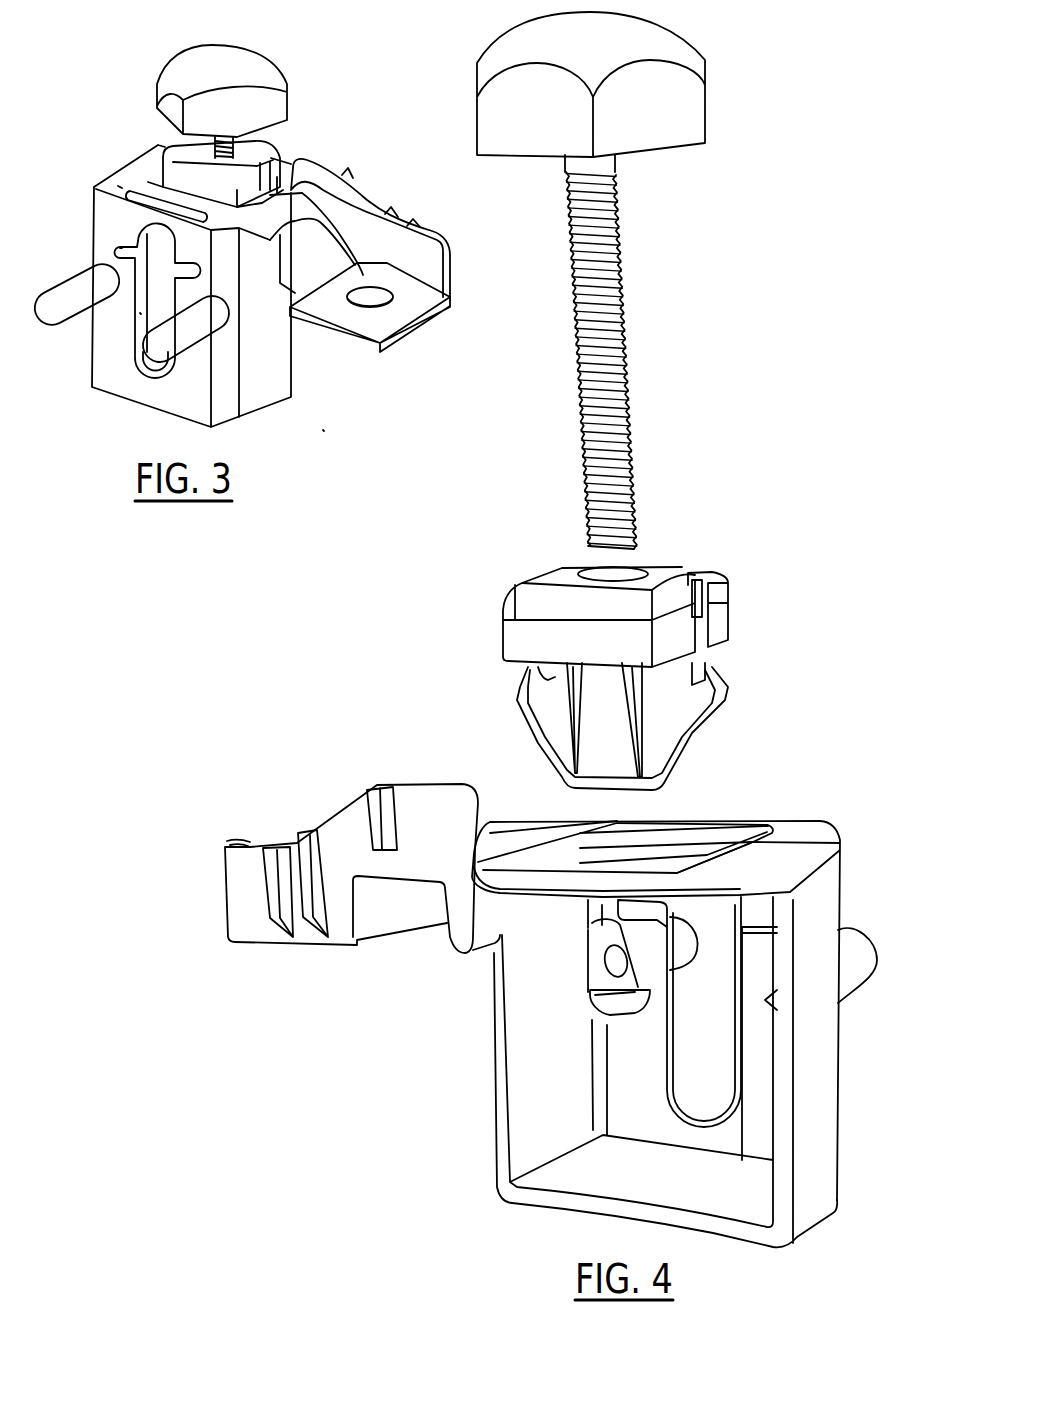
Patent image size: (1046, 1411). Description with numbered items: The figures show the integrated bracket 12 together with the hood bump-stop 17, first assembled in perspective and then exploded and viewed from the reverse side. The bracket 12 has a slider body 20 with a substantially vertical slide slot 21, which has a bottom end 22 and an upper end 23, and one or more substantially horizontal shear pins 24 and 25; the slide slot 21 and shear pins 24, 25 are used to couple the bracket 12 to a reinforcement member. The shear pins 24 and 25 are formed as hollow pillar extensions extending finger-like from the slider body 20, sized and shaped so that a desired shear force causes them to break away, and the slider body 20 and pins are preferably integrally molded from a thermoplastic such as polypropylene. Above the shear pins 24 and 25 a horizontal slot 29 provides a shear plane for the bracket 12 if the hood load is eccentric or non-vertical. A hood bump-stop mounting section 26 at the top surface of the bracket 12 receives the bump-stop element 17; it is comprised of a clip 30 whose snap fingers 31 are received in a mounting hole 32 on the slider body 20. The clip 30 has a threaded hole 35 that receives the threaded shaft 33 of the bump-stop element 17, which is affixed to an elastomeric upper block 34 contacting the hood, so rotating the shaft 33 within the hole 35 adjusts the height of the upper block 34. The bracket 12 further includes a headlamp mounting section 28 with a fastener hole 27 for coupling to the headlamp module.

In FIG. 3, the integrated bracket 12 is at (323, 430).
In FIG. 3, the hood bump-stop 17 is at (247, 63).
In FIG. 4, the hood bump-stop 17 is at (626, 280).
In FIG. 3, the slider body 20 is at (283, 373).
In FIG. 4, the slider body 20 is at (822, 1123).
In FIG. 3, the slide slot 21 is at (140, 313).
In FIG. 3, the bottom end 22 is at (130, 363).
In FIG. 4, the bottom end 22 is at (667, 1083).
In FIG. 3, the upper end 23 is at (120, 187).
In FIG. 3, the shear pin 24 is at (83, 282).
In FIG. 4, the shear pin 24 is at (843, 993).
In FIG. 3, the shear pin 25 is at (185, 340).
In FIG. 3, the hood bump-stop mounting section 26 is at (158, 167).
In FIG. 3, the fastener hole 27 is at (373, 292).
In FIG. 3, the headlamp mounting section 28 is at (413, 330).
In FIG. 4, the headlamp mounting section 28 is at (273, 947).
In FIG. 3, the horizontal slot 29 is at (115, 243).
In FIG. 4, the clip 30 is at (655, 593).
In FIG. 4, the snap fingers 31 is at (710, 712).
In FIG. 4, the mounting hole 32 is at (690, 845).
In FIG. 4, the threaded shaft 33 is at (632, 357).
In FIG. 4, the elastomeric upper block 34 is at (702, 62).
In FIG. 4, the threaded hole 35 is at (597, 575).